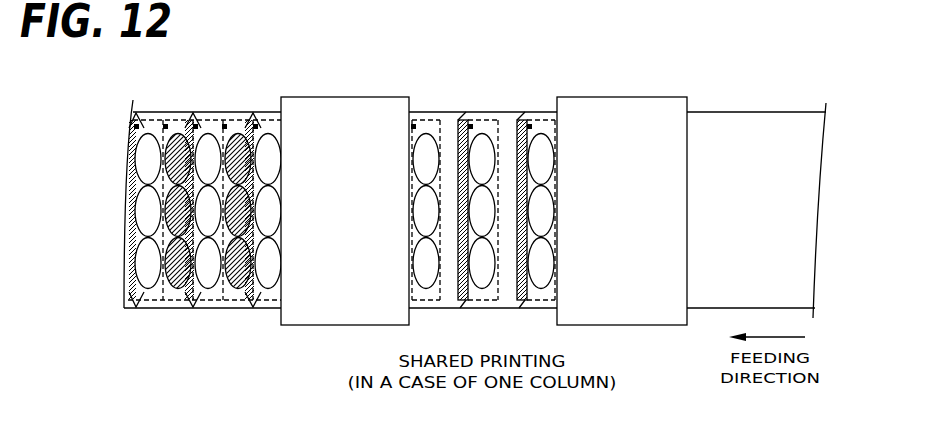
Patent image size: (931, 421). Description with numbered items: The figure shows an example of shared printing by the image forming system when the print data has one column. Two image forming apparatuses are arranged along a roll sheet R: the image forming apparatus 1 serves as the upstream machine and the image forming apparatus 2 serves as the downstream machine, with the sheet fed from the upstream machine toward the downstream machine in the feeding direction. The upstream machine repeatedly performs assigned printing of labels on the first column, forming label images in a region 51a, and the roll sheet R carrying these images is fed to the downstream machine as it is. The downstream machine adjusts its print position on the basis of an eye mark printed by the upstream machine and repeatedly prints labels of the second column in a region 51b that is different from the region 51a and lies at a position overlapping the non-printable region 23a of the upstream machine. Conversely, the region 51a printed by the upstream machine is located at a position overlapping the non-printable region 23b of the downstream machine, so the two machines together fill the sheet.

The image forming apparatus 1 is at (658, 97).
The image forming apparatus 2 is at (370, 97).
The roll sheet R is at (795, 112).
The region 51a is at (147, 120).
The region 51b is at (177, 120).
The non-printable region 23a is at (190, 309).
The non-printable region 23b is at (136, 309).